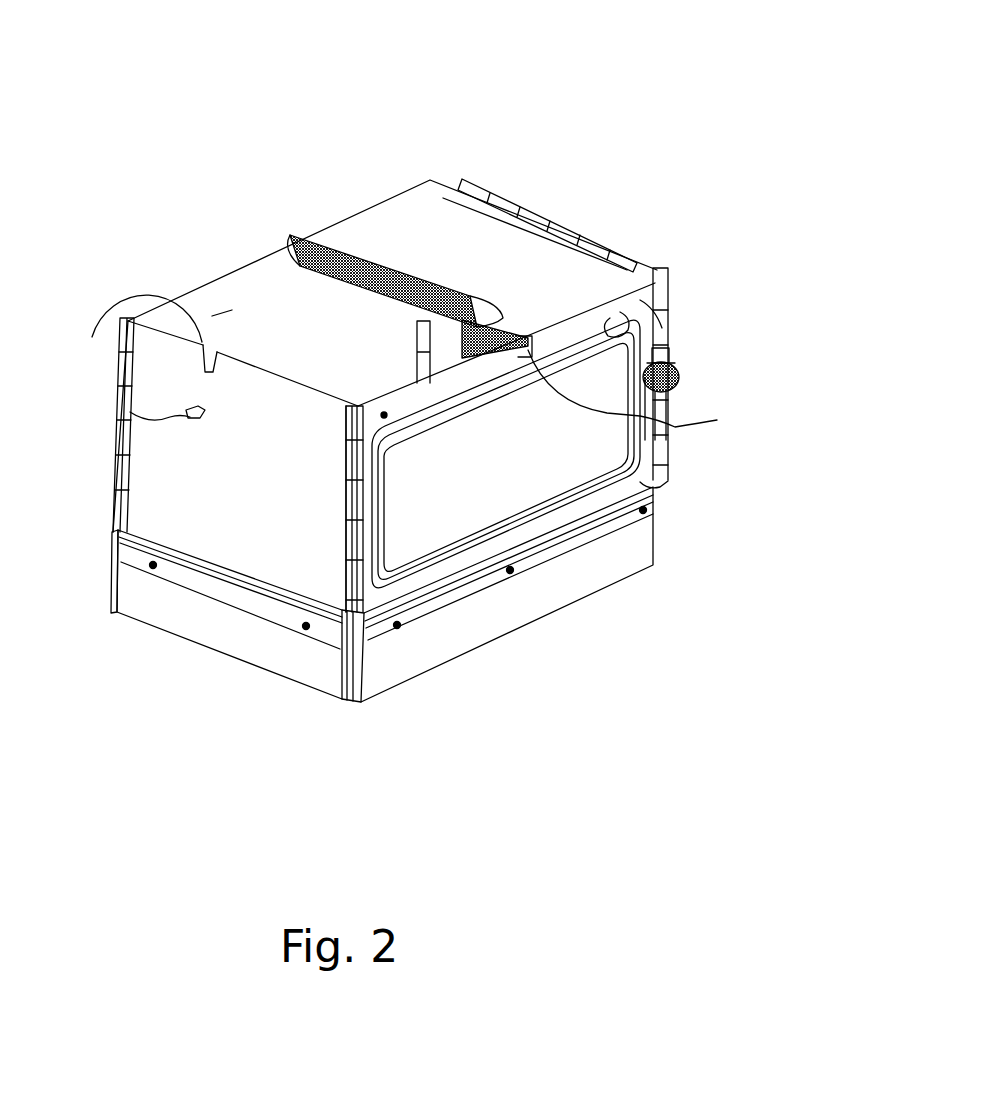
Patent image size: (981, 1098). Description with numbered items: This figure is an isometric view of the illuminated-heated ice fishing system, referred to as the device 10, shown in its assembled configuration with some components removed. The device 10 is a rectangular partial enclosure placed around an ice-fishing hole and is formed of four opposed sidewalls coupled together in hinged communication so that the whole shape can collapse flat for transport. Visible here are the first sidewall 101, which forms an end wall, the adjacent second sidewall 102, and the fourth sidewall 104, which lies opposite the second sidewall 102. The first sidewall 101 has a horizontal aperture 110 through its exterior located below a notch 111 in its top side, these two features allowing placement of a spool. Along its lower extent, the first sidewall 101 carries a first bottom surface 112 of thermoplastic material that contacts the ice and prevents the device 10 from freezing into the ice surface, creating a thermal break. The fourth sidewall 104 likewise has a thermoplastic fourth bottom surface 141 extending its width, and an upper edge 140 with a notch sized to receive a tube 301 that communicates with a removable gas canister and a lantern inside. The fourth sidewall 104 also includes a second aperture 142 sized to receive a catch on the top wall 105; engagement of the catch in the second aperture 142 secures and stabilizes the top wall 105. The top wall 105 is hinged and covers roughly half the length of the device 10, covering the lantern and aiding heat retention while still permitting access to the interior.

The device 10 is at (158, 70).
The first sidewall 101 is at (147, 513).
The second sidewall 102 is at (213, 282).
The fourth sidewall 104 is at (655, 462).
The top wall 105 is at (643, 252).
The horizontal aperture 110 is at (117, 413).
The notch 111 is at (118, 413).
The first bottom surface 112 is at (172, 618).
The upper edge 140 is at (668, 296).
The fourth bottom surface 141 is at (600, 580).
The second aperture 142 is at (717, 420).
The tube 301 is at (664, 344).